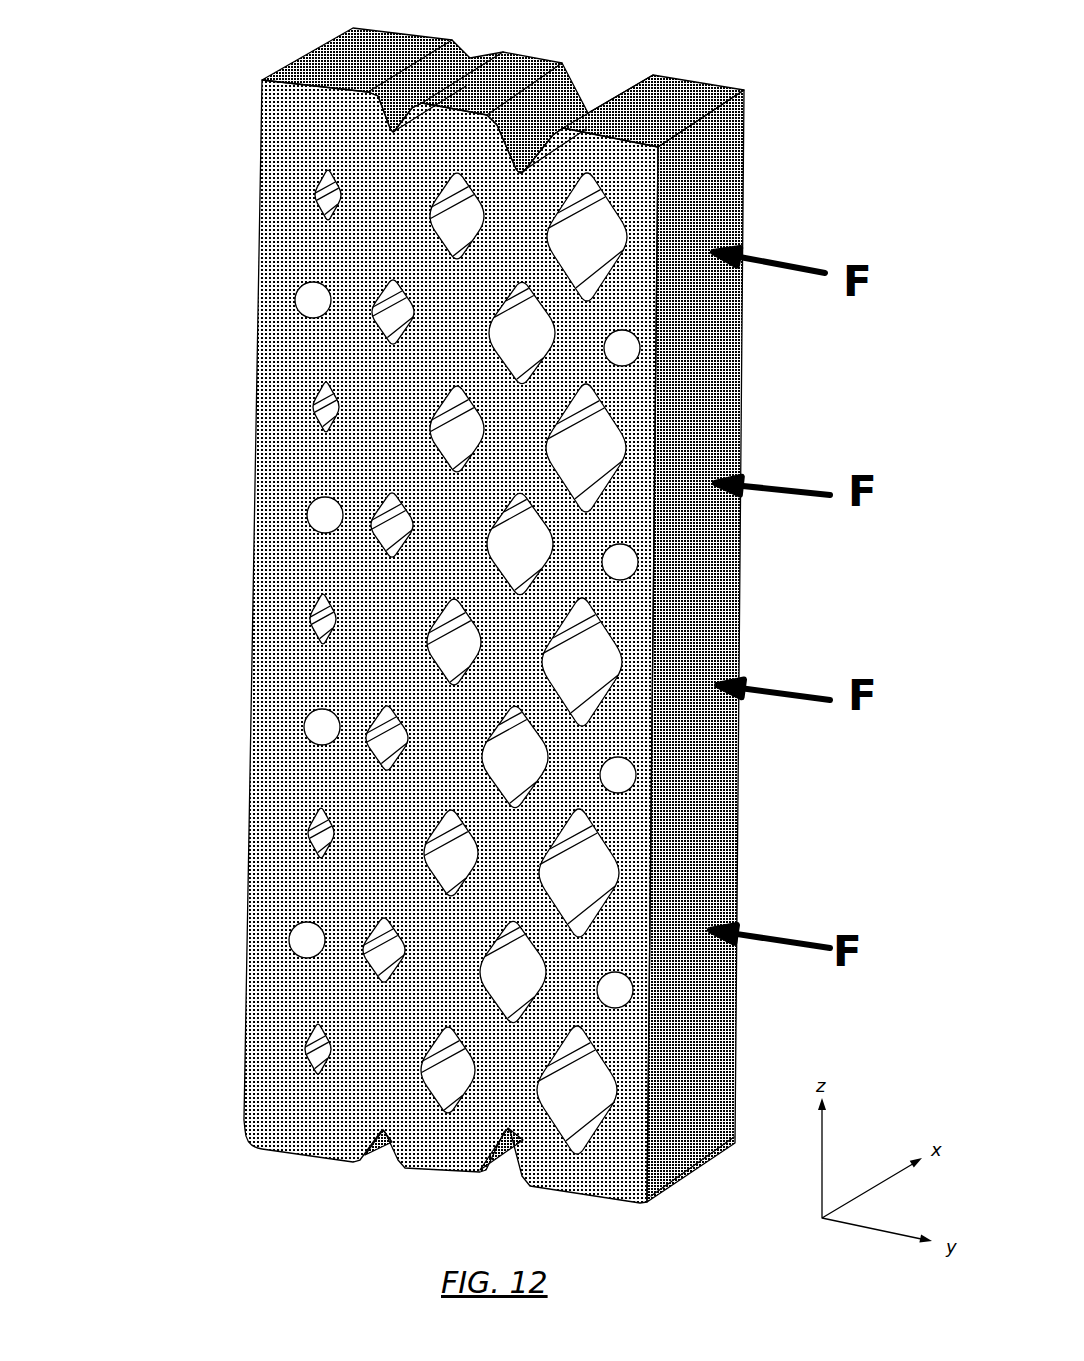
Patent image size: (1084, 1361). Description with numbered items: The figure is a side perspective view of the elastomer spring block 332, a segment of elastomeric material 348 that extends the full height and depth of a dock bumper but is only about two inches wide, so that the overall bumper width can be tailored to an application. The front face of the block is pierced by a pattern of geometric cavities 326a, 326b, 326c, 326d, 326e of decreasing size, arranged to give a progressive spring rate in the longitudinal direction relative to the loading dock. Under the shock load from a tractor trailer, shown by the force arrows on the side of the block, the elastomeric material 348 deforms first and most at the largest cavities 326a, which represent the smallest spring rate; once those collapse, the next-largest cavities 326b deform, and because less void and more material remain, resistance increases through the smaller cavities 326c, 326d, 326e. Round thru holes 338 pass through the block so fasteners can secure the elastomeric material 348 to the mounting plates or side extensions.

The elastomer spring block 332 is at (469, 608).
The largest geometric cavities 326a is at (563, 190).
The next-largest geometric cavities 326b is at (495, 298).
The geometric cavity 326c is at (433, 402).
The geometric cavity 326d is at (372, 508).
The geometric cavity 326e is at (311, 615).
The thru holes 338 is at (296, 297).
The elastomeric material 348 is at (727, 612).